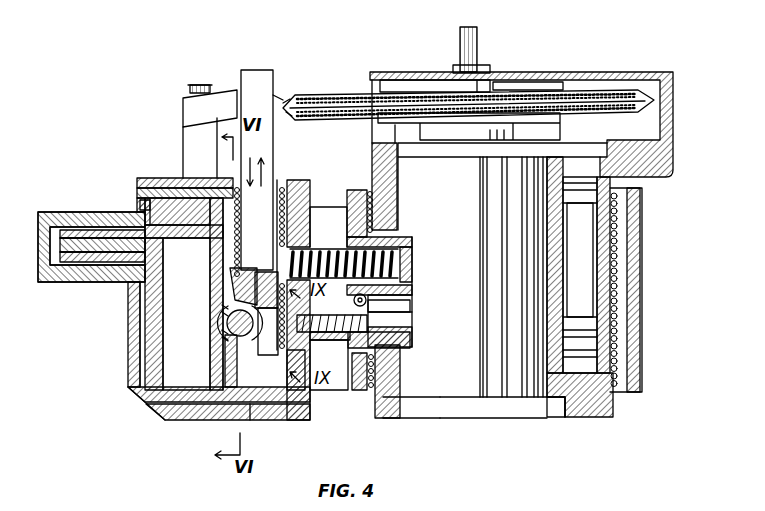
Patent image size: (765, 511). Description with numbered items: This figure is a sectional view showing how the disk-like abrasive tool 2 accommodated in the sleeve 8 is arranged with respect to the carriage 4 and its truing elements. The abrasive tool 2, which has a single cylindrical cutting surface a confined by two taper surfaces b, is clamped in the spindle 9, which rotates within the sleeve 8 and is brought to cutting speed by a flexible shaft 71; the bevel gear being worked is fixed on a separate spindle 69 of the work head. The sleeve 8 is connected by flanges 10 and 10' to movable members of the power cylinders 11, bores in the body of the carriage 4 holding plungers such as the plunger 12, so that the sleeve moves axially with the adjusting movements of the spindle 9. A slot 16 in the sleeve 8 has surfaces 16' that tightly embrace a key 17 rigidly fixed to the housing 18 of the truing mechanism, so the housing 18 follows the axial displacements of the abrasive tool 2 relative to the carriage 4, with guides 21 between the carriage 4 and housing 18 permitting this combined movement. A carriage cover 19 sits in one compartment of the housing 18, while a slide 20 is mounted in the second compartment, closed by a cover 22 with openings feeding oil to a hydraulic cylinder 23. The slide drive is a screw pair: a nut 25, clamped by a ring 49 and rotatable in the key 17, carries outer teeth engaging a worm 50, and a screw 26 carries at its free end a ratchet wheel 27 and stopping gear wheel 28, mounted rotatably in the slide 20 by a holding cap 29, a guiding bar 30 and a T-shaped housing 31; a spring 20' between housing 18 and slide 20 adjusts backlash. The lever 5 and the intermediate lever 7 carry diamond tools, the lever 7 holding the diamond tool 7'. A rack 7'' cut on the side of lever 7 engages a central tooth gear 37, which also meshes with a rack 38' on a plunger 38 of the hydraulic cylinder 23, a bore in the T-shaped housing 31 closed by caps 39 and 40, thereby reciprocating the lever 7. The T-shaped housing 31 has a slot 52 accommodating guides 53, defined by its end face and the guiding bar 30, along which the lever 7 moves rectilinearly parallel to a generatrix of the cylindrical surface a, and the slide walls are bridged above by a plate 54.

The disk-like abrasive tool 2 is at (345, 96).
The carriage 4 is at (668, 152).
The lever 5 is at (183, 103).
The intermediate lever 7 is at (257, 153).
The diamond tool 7' is at (280, 71).
The rack 7'' is at (243, 286).
The sleeve 8 is at (538, 420).
The spindle 9 is at (480, 143).
The flange 10 is at (502, 174).
The flange 10' is at (455, 425).
The power cylinder 11 is at (612, 392).
The plunger 12 is at (566, 241).
The slot 16 is at (397, 292).
The slot surface 16' is at (399, 284).
The key 17 is at (352, 353).
The housing 18 is at (346, 203).
The cover 19 is at (641, 305).
The slide 20 is at (219, 418).
The spring 20' is at (344, 242).
The guide 21 is at (372, 192).
The cover 22 is at (128, 323).
The hydraulic cylinder 23 is at (140, 205).
The nut 25 is at (378, 325).
The screw 26 is at (342, 318).
The ratchet wheel 27 is at (247, 322).
The stopping gear wheel 28 is at (300, 341).
The holding cap 29 is at (285, 370).
The guiding bar 30 is at (312, 392).
The T-shaped housing 31 is at (145, 348).
The central tooth gear 37 is at (225, 340).
The plunger 38 is at (119, 334).
The rack 38' is at (202, 294).
The cap 39 is at (167, 190).
The cap 40 is at (150, 402).
The ring 49 is at (413, 340).
The worm 50 is at (354, 298).
The slot 52 is at (252, 400).
The guides 53 is at (224, 217).
The plate 54 is at (148, 179).
The spindle 69 is at (205, 85).
The flexible shaft 71 is at (478, 42).
The cylindrical cutting surface a is at (285, 98).
The taper surface b is at (295, 114).